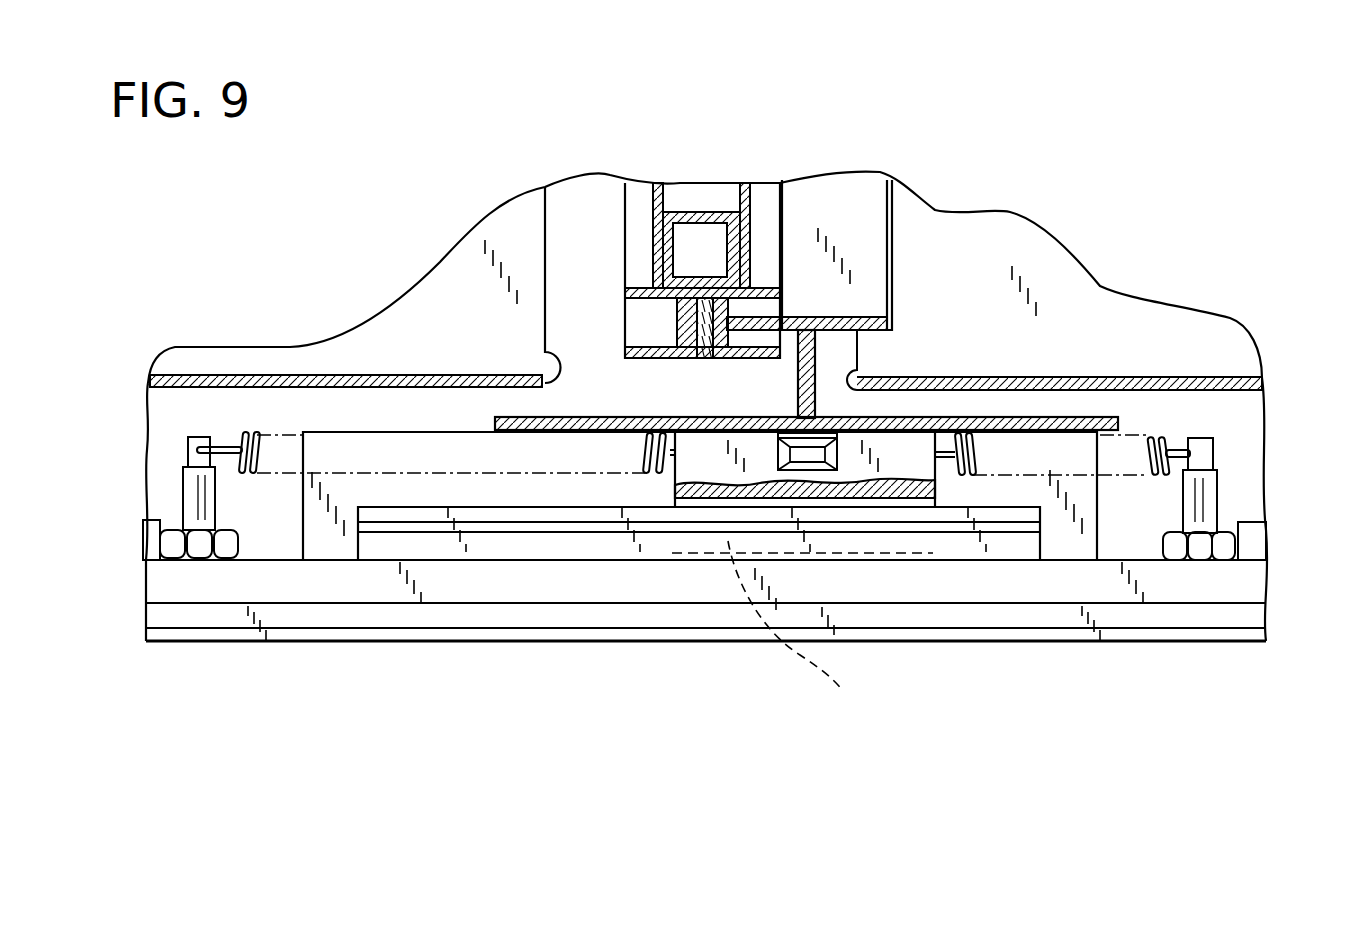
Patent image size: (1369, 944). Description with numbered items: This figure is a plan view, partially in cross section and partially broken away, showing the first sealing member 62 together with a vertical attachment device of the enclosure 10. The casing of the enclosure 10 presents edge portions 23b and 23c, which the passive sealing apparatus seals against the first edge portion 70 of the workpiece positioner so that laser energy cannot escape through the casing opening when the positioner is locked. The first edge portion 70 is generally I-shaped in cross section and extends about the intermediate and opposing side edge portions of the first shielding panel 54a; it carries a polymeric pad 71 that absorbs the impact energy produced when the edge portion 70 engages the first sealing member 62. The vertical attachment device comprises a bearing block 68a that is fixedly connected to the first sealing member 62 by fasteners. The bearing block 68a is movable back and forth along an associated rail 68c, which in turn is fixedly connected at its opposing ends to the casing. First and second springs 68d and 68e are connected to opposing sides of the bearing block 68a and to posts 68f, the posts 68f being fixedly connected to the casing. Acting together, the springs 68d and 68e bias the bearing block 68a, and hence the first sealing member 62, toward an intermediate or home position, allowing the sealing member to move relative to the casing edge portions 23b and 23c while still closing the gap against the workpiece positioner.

The enclosure 10 is at (582, 125).
The edge portion of the casing 23b is at (550, 352).
The edge portion of the casing 23c is at (858, 378).
The first shielding panel 54a is at (753, 234).
The first sealing member 62 is at (815, 360).
The first edge portion 70 is at (645, 322).
The polymeric pad 71 is at (720, 310).
The bearing block 68a is at (815, 455).
The rail 68c is at (1020, 515).
The first spring 68d is at (252, 432).
The second spring 68e is at (1157, 440).
The post 68f is at (190, 488).